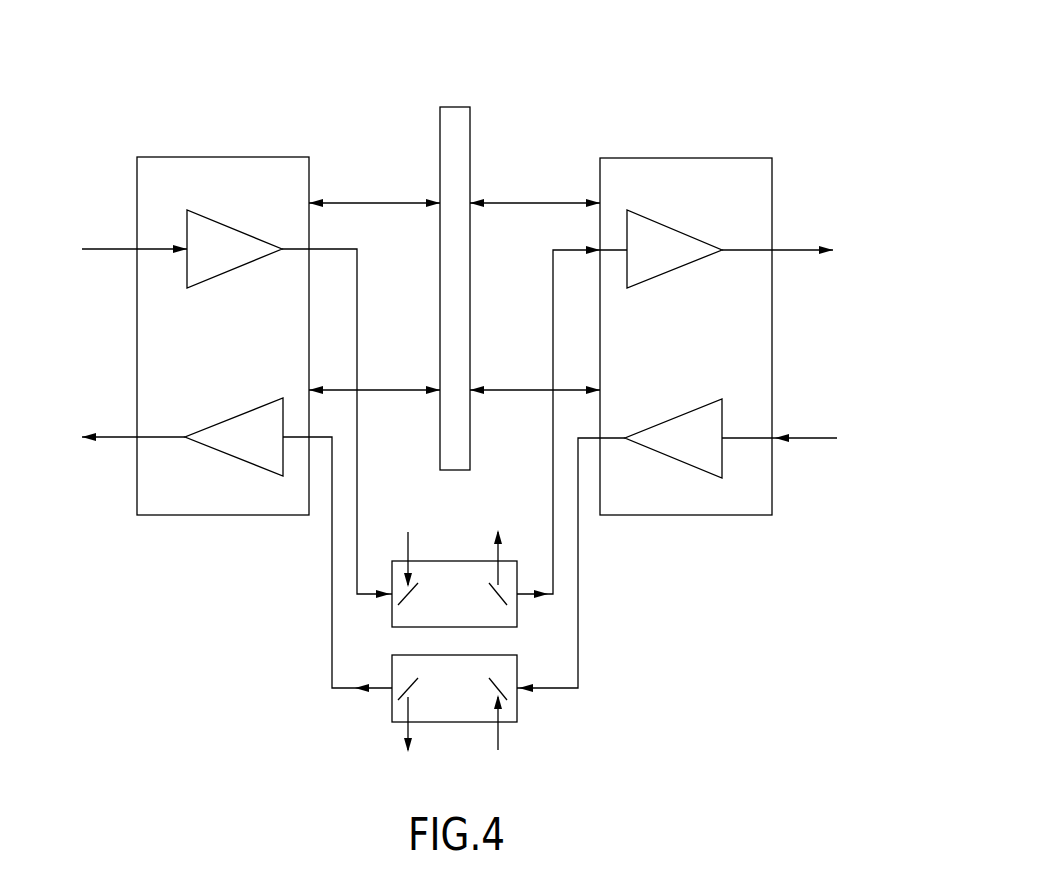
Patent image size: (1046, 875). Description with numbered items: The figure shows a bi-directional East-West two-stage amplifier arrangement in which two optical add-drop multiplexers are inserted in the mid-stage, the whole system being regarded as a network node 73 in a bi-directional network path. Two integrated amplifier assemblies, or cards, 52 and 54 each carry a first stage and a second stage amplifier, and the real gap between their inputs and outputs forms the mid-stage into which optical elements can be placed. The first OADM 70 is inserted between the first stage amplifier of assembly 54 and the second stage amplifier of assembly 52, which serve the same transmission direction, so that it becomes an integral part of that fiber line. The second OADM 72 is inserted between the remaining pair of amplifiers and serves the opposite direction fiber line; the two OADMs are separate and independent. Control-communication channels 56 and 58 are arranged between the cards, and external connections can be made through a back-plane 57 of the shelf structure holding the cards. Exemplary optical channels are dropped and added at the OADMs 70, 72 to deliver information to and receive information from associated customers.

The integrated amplifier assembly 52 is at (685, 158).
The integrated amplifier assembly 54 is at (223, 157).
The control-communication channel 56 is at (368, 202).
The back-plane 57 is at (453, 107).
The control-communication channel 58 is at (397, 389).
The OADM 1 70 is at (450, 561).
The OADM 2 72 is at (517, 678).
The network node 73 is at (692, 68).